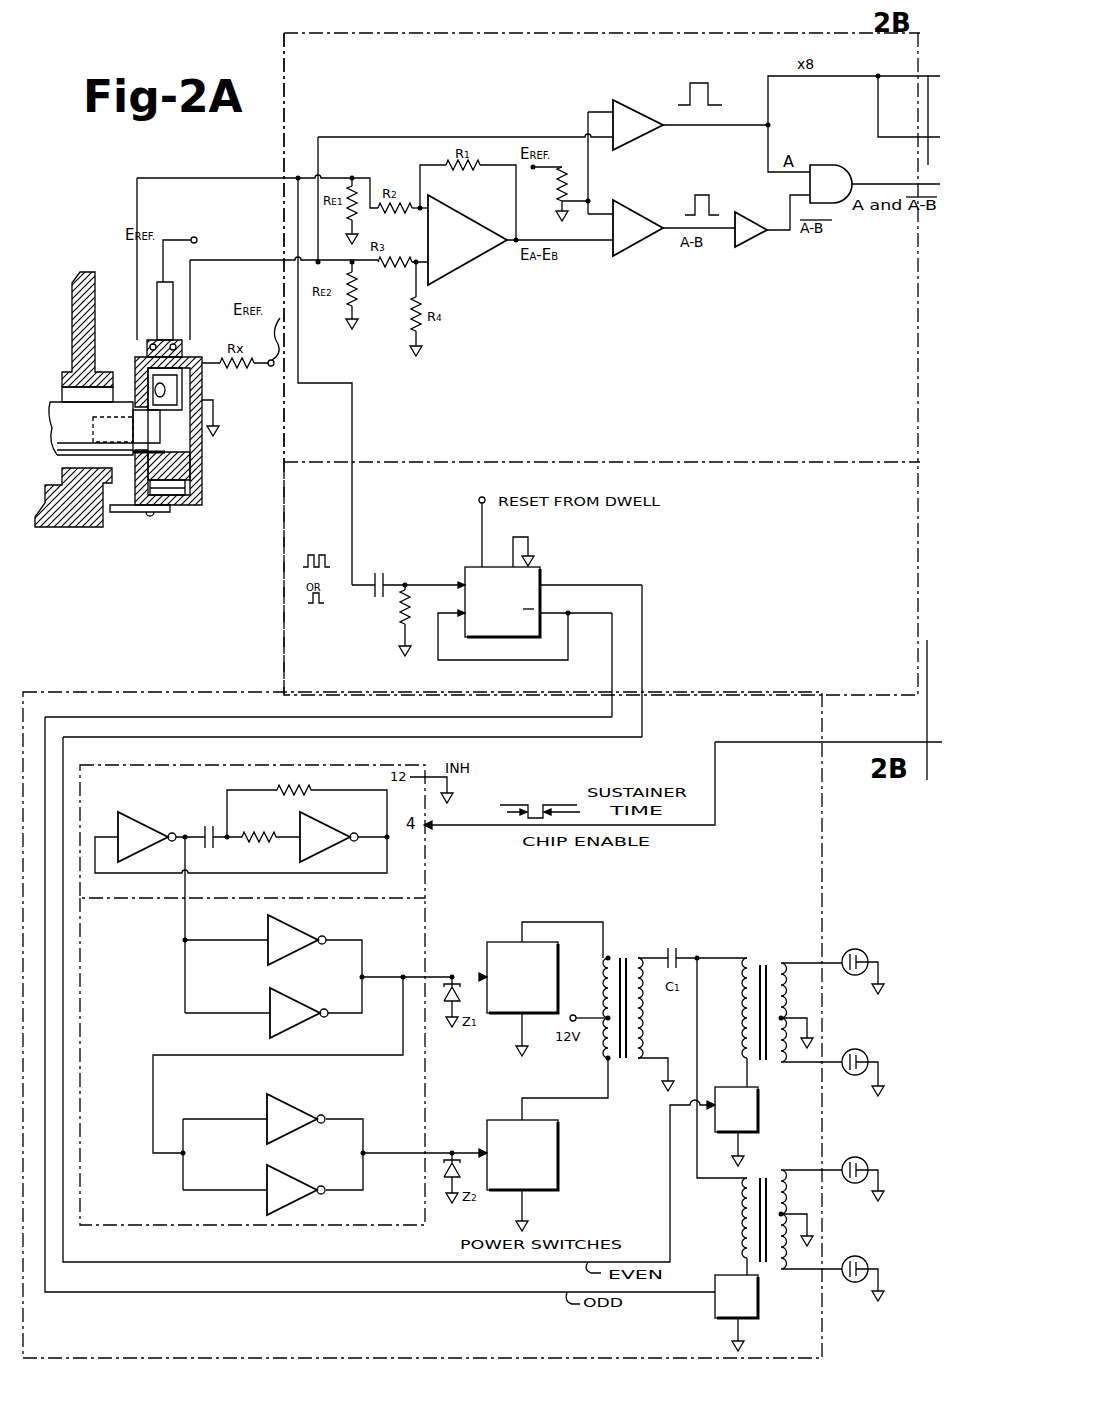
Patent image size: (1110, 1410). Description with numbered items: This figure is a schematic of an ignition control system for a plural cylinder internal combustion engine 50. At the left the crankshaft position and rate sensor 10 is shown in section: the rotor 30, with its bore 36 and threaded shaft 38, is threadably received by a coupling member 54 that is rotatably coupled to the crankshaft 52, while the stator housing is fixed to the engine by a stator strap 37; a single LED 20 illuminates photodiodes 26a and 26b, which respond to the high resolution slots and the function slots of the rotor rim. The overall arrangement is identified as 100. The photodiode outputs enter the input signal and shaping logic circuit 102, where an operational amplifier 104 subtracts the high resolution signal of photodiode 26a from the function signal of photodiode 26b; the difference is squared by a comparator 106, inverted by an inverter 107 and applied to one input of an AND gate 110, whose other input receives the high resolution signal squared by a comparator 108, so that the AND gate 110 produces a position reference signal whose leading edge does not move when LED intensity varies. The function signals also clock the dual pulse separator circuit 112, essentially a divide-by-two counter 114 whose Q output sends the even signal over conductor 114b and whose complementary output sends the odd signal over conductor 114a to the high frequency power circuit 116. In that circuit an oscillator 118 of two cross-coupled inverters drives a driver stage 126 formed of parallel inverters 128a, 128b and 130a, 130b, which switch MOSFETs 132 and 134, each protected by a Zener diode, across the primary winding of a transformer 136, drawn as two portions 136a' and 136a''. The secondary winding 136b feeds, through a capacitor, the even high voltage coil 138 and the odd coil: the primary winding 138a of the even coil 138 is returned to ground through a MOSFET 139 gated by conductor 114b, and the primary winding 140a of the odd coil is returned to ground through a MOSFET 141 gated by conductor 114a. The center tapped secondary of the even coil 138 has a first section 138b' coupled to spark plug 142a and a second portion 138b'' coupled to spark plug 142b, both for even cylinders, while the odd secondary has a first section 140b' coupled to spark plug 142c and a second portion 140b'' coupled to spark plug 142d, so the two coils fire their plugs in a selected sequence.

The crankshaft position and rate sensor 10 is at (178, 504).
The LED 20 is at (185, 387).
The photodiode 26a is at (177, 345).
The photodiode 26b is at (149, 343).
The rotor 30 is at (180, 483).
The bore 36 is at (182, 464).
The stator strap 37 is at (124, 513).
The threaded shaft 38 is at (92, 430).
The internal combustion engine 50 is at (66, 532).
The crankshaft 52 is at (78, 412).
The coupling member 54 is at (123, 405).
The control system 100 is at (264, 627).
The input signal and shaping logic circuit 102 is at (890, 448).
The operational amplifier 104 is at (485, 220).
The comparator 106 is at (649, 213).
The inverter 107 is at (756, 213).
The comparator 108 is at (636, 100).
The AND gate 110 is at (843, 165).
The dual pulse separator circuit 112 is at (860, 697).
The divide-by-two counter 114 is at (542, 573).
The conductor 114a is at (612, 679).
The conductor 114b is at (642, 611).
The high frequency power circuit 116 is at (565, 1357).
The oscillator 118 is at (252, 831).
The drivers 126 is at (252, 1061).
The inverter 128a is at (292, 934).
The inverter 128b is at (306, 1001).
The inverter 130a is at (290, 1107).
The inverter 130b is at (284, 1180).
The MOSFET 132 is at (485, 941).
The MOSFET 134 is at (485, 1118).
The transformer 136 is at (631, 957).
The primary winding half 136a' is at (587, 988).
The primary winding half 136a'' is at (570, 1047).
The secondary winding 136b is at (646, 1022).
The even high voltage inductive coil 138 is at (768, 964).
The primary winding 138a is at (737, 971).
The first section of secondary winding 138b' is at (823, 1005).
The second portion of secondary winding 138b'' is at (802, 1053).
The MOSFET 139 is at (760, 1110).
The primary winding 140a is at (740, 1211).
The first section of secondary winding 140b' is at (821, 1208).
The second portion of secondary winding 140b'' is at (802, 1259).
The MOSFET 141 is at (713, 1309).
The spark plug 142a is at (858, 948).
The spark plug 142b is at (858, 1049).
The spark plug 142c is at (859, 1157).
The spark plug 142d is at (858, 1256).